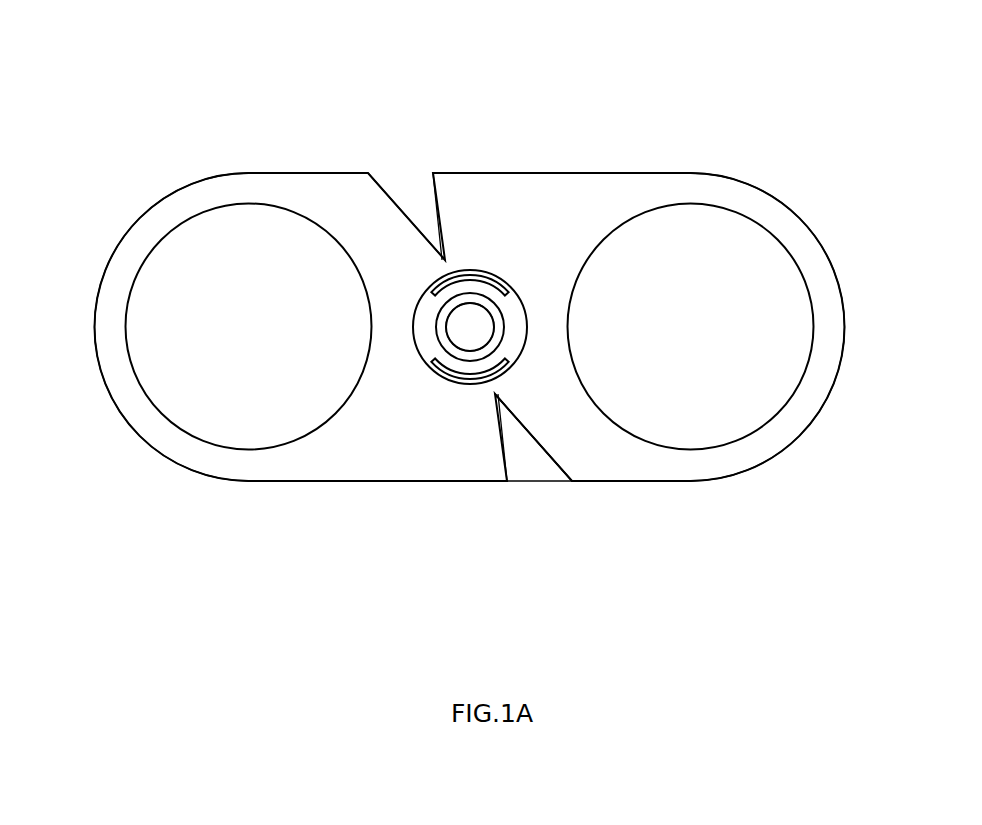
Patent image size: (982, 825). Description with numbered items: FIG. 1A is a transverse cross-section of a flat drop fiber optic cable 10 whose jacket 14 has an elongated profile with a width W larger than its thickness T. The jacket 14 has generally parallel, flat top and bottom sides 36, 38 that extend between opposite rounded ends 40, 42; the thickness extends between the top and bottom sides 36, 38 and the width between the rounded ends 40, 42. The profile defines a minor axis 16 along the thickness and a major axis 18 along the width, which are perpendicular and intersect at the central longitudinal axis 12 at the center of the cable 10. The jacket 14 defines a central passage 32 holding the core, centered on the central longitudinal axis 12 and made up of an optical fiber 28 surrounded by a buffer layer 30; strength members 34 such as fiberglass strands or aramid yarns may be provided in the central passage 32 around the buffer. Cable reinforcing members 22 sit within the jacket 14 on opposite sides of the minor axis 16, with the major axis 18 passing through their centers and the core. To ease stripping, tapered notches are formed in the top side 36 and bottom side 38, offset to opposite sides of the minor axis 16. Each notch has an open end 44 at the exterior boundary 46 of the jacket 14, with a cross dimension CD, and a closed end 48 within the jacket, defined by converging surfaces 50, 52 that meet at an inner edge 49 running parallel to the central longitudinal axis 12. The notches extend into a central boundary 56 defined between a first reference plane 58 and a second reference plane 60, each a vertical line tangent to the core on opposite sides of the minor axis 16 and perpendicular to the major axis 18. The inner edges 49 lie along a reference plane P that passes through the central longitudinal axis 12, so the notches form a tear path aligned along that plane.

The fiber optic cable 10 is at (172, 485).
The central longitudinal axis 12 is at (462, 325).
The jacket 14 is at (602, 205).
The minor axis 16 is at (470, 578).
The major axis 18 is at (65, 333).
The cable reinforcing members 22 is at (470, 327).
The optical fiber 28 is at (460, 338).
The buffer layer 30 is at (497, 313).
The central passage 32 is at (420, 338).
The strength members 34 is at (482, 278).
The top side 36 is at (657, 173).
The bottom side 38 is at (662, 482).
The rounded end 40 is at (127, 422).
The rounded end 42 is at (830, 392).
The open end 44 is at (570, 482).
The exterior boundary 46 is at (250, 482).
The closed end 48 is at (443, 262).
The inner edge 49 is at (470, 245).
The surface 50 is at (386, 193).
The surface 52 is at (440, 237).
The central boundary 56 is at (485, 128).
The first reference plane 58 is at (433, 528).
The second reference plane 60 is at (507, 530).